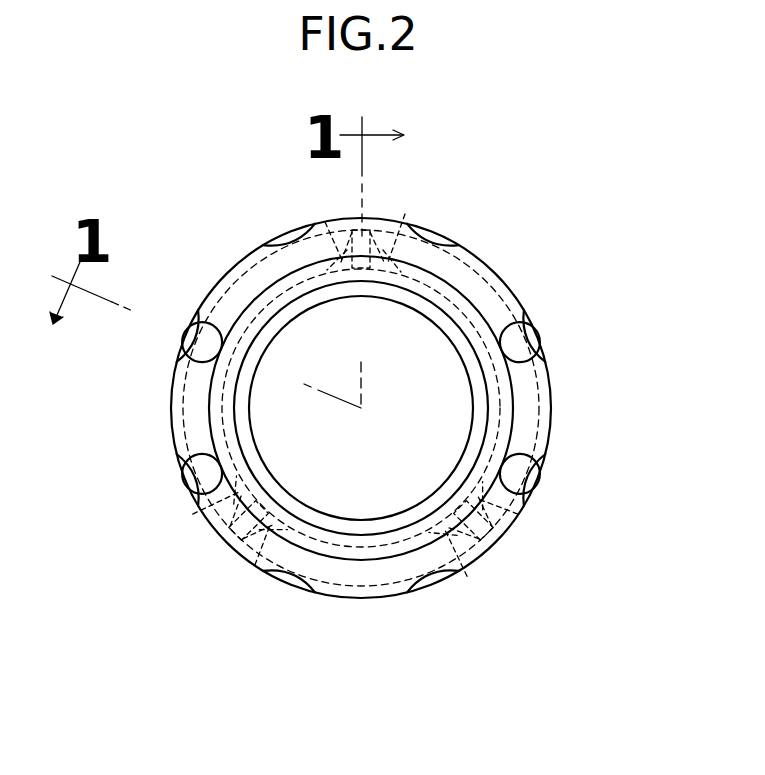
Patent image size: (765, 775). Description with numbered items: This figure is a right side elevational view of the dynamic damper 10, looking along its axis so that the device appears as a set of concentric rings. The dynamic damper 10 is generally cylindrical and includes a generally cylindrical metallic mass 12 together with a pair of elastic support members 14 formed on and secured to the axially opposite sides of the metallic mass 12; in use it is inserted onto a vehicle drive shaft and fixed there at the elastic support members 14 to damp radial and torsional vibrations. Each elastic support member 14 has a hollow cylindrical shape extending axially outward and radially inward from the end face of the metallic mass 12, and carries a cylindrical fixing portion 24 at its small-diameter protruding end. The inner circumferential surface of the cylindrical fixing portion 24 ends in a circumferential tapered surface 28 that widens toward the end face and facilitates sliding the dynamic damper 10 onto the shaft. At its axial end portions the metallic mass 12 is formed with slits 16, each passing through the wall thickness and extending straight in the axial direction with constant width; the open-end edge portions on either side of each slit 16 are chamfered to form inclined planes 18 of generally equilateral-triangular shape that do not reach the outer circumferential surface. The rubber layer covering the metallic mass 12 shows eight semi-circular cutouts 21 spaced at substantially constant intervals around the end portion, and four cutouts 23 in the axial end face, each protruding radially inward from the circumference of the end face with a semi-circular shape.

The dynamic damper 10 is at (508, 211).
The metallic mass 12 is at (360, 600).
The elastic support member 14 is at (466, 522).
The slit 16 is at (370, 232).
The inclined plane 18 is at (323, 220).
The cutout 21 is at (300, 230).
The cutout 23 is at (516, 328).
The cylindrical fixing portion 24 is at (272, 300).
The tapered surface 28 is at (442, 317).